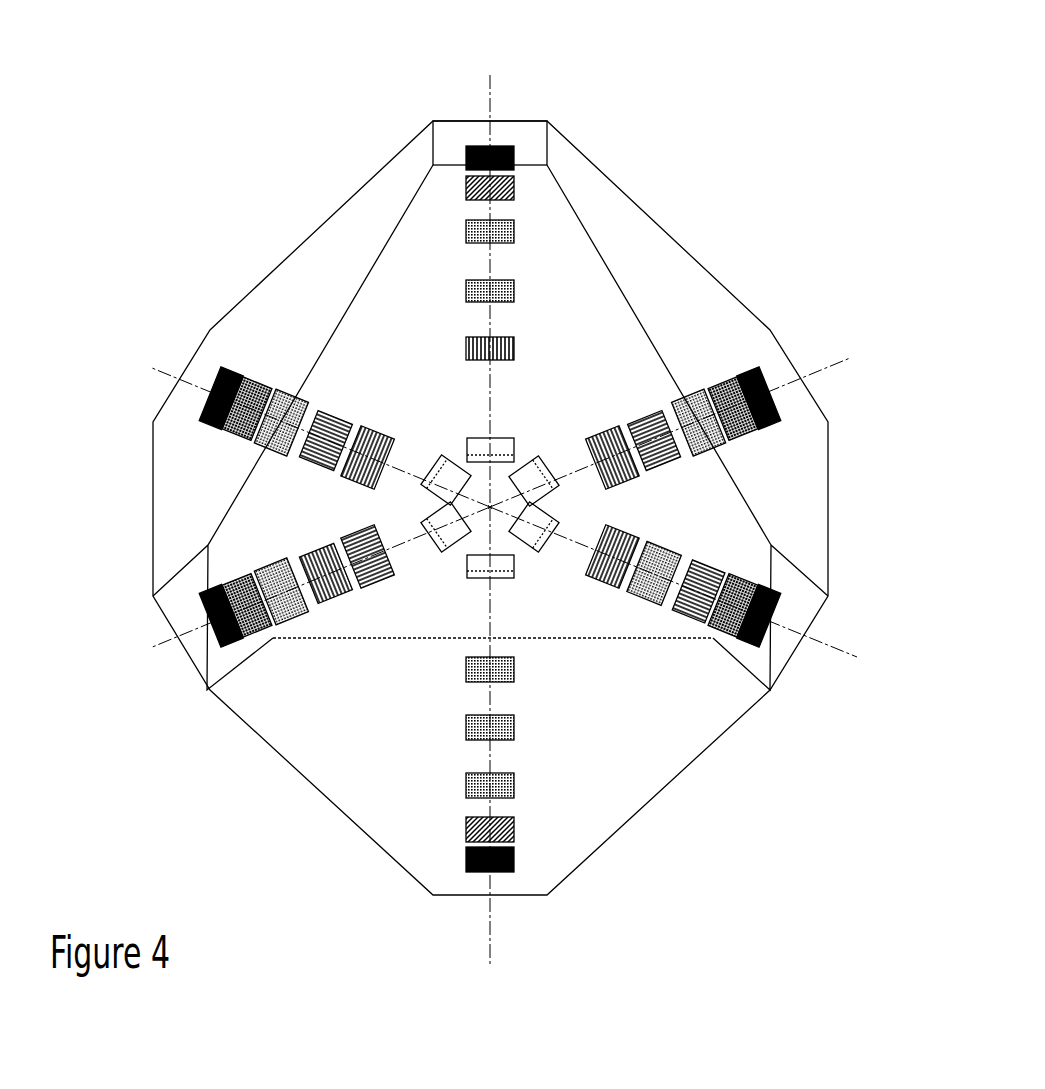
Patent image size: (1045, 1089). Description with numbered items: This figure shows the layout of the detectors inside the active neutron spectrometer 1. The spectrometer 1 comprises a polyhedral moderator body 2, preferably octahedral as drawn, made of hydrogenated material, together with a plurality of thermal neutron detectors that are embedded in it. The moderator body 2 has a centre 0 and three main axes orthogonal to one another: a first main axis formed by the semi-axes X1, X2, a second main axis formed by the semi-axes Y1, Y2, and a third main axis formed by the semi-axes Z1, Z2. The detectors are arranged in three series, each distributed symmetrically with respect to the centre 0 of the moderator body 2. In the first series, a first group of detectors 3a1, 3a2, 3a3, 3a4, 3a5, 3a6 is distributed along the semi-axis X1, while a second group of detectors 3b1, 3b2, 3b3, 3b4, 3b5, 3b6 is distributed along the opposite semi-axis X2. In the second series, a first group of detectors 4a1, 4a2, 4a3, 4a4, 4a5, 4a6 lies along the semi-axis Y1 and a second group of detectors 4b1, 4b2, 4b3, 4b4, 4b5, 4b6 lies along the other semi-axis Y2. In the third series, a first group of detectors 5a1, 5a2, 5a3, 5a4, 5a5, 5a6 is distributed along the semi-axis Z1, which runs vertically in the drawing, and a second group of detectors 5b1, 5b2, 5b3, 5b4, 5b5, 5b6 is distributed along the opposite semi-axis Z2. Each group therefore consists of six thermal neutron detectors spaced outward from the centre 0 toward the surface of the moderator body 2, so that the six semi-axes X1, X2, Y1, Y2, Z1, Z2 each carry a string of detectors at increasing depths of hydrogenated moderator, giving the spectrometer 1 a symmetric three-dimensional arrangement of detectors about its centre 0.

The centre 0 is at (486, 503).
The active neutron spectrometer 1 is at (705, 845).
The polyhedral moderator body 2 is at (662, 285).
The semi-axis X1 is at (857, 657).
The semi-axis X2 is at (152, 368).
The semi-axis Y1 is at (850, 358).
The semi-axis Y2 is at (150, 648).
The semi-axis Z1 is at (493, 78).
The semi-axis Z2 is at (495, 928).
The thermal neutron detector 3a1 is at (545, 565).
The thermal neutron detector 3a2 is at (625, 592).
The thermal neutron detector 3a3 is at (668, 607).
The thermal neutron detector 3a4 is at (710, 621).
The thermal neutron detector 3a5 is at (735, 572).
The thermal neutron detector 3a6 is at (789, 608).
The thermal neutron detector 3b1 is at (440, 460).
The thermal neutron detector 3b2 is at (360, 427).
The thermal neutron detector 3b3 is at (315, 405).
The thermal neutron detector 3b4 is at (268, 388).
The thermal neutron detector 3b5 is at (240, 446).
The thermal neutron detector 3b6 is at (195, 412).
The thermal neutron detector 4a1 is at (572, 500).
The thermal neutron detector 4a2 is at (640, 455).
The thermal neutron detector 4a3 is at (668, 412).
The thermal neutron detector 4a4 is at (715, 393).
The thermal neutron detector 4a5 is at (752, 378).
The thermal neutron detector 4a6 is at (783, 388).
The thermal neutron detector 4b1 is at (425, 510).
The thermal neutron detector 4b2 is at (357, 529).
The thermal neutron detector 4b3 is at (315, 552).
The thermal neutron detector 4b4 is at (268, 622).
The thermal neutron detector 4b5 is at (232, 645).
The thermal neutron detector 4b6 is at (200, 640).
The thermal neutron detector 5a1 is at (514, 438).
The thermal neutron detector 5a2 is at (516, 338).
The thermal neutron detector 5a3 is at (516, 280).
The thermal neutron detector 5a4 is at (462, 219).
The thermal neutron detector 5a5 is at (460, 177).
The thermal neutron detector 5a6 is at (465, 146).
The thermal neutron detector 5b1 is at (462, 588).
The thermal neutron detector 5b2 is at (462, 690).
The thermal neutron detector 5b3 is at (467, 745).
The thermal neutron detector 5b4 is at (530, 787).
The thermal neutron detector 5b5 is at (530, 835).
The thermal neutron detector 5b6 is at (530, 875).